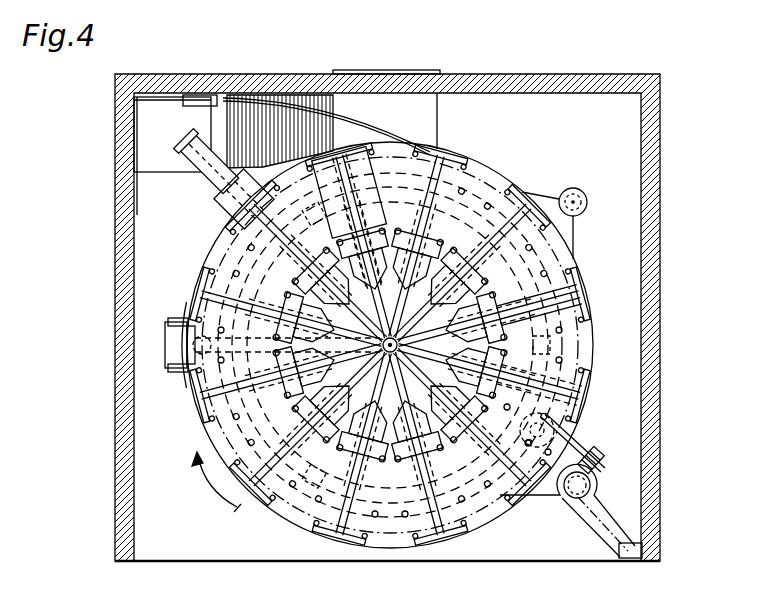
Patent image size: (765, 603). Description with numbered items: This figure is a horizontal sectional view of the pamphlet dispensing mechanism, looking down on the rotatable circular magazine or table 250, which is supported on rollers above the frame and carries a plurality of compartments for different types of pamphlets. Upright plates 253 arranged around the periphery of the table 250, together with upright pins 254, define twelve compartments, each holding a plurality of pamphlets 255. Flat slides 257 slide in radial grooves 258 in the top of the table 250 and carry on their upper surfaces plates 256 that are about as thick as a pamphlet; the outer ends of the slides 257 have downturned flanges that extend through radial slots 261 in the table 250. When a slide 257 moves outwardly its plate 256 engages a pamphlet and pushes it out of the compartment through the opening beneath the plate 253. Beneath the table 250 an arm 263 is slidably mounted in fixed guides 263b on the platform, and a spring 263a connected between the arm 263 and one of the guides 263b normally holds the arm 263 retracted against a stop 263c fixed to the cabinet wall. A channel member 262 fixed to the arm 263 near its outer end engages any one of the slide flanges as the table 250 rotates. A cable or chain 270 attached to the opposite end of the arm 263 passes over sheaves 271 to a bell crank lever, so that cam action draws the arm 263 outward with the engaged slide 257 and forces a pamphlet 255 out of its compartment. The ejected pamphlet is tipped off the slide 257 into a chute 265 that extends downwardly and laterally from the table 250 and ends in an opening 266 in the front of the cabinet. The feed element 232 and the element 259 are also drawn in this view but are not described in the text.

The feed station 232 is at (163, 330).
The rotatable circular magazine or table 250 is at (553, 250).
The upright plates 253 is at (450, 151).
The upright pins 254 is at (485, 205).
The pamphlets 255 is at (358, 167).
The plates 256 is at (220, 200).
The flat slides 257 is at (224, 233).
The radial grooves 258 is at (300, 281).
The pocket 259 is at (325, 412).
The radial slots 261 is at (436, 162).
The channel member 262 is at (199, 124).
The arm 263 is at (603, 518).
The spring 263a is at (492, 313).
The fixed guides 263b is at (586, 352).
The stop 263c is at (637, 550).
The chute 265 is at (150, 116).
The opening 266 is at (428, 105).
The cable or chain 270 is at (574, 447).
The sheaves 271 is at (584, 406).